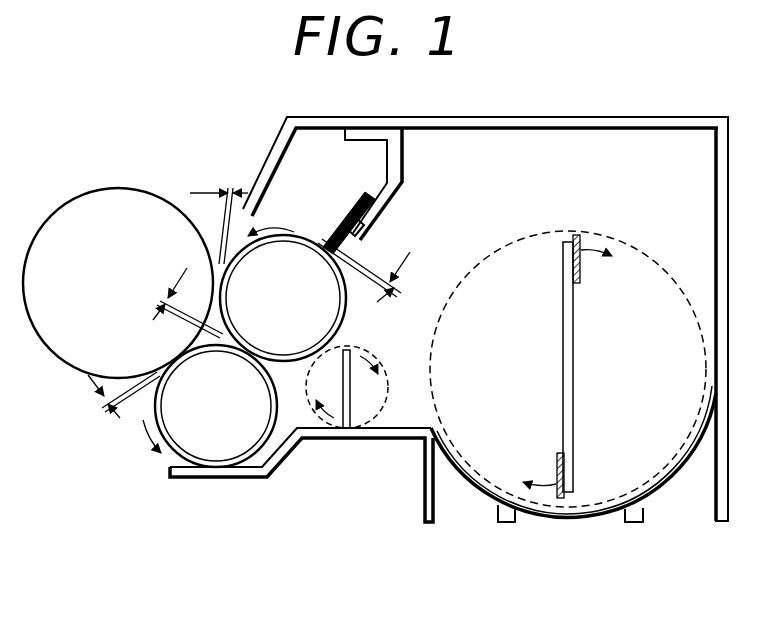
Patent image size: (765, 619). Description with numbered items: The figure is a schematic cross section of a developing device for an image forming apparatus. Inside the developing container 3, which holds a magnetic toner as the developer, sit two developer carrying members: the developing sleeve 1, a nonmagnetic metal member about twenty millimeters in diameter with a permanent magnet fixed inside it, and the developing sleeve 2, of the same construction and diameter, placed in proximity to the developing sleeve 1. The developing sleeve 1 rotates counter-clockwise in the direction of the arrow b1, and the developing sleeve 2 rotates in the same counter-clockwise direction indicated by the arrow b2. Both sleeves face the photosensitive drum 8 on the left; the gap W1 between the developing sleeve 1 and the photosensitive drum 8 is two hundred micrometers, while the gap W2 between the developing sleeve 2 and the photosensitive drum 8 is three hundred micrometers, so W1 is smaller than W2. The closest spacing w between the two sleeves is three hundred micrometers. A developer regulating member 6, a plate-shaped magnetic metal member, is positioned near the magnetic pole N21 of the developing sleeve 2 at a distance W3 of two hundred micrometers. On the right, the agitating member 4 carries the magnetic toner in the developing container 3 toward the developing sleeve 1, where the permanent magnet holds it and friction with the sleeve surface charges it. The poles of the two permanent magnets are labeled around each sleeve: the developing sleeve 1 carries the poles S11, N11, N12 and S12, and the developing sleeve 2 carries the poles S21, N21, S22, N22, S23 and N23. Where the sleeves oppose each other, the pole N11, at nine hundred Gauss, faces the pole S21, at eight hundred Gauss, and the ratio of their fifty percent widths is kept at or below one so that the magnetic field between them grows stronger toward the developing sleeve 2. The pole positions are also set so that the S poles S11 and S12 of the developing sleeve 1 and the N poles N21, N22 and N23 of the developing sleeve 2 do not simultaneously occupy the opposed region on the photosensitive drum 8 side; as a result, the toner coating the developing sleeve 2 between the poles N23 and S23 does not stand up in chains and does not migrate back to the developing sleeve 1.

The developing sleeve 1 is at (279, 395).
The developing sleeve 2 is at (301, 240).
The developing container 3 is at (660, 118).
The agitating member 4 is at (347, 400).
The developer regulating member 6 is at (351, 194).
The photosensitive drum 8 is at (109, 189).
The distance between developing sleeve 1 and photosensitive drum W1 is at (108, 395).
The distance between developing sleeve 2 and photosensitive drum W2 is at (216, 216).
The distance between developer regulating member and developing sleeve 2 W3 is at (372, 270).
The distance between developing sleeves w is at (188, 300).
The rotational direction of developing sleeve 1 b1 is at (139, 440).
The rotational direction of developing sleeve 2 b2 is at (271, 218).
The magnetic pole S11 is at (194, 380).
The magnetic pole N11 is at (245, 390).
The magnetic pole N12 is at (186, 429).
The magnetic pole S12 is at (232, 434).
The magnetic pole S21 is at (314, 301).
The magnetic pole N21 is at (306, 322).
The magnetic pole S22 is at (264, 270).
The magnetic pole N22 is at (305, 272).
The magnetic pole S23 is at (279, 337).
The magnetic pole N23 is at (248, 303).